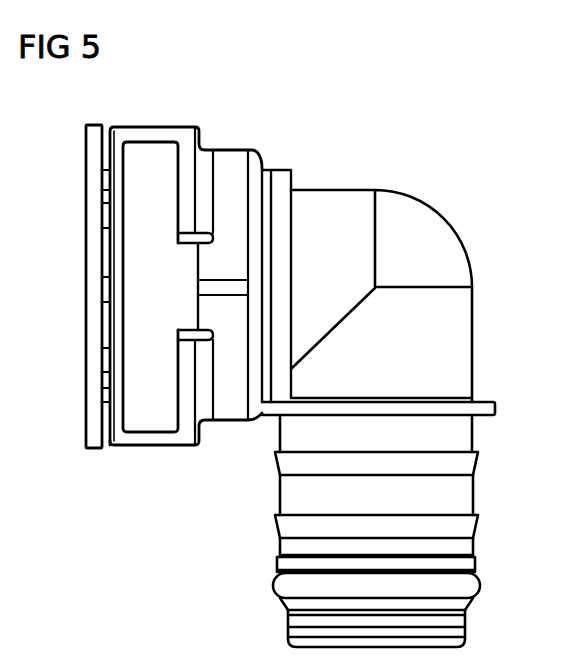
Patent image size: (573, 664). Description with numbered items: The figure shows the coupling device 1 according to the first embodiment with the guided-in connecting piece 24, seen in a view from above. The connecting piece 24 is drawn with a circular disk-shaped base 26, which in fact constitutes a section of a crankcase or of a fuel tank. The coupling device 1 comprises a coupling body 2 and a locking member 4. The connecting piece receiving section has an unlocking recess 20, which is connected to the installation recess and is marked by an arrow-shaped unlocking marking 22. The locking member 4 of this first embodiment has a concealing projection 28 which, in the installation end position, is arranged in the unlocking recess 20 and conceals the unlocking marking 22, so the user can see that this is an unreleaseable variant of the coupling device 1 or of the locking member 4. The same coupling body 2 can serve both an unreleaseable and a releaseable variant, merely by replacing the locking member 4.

The coupling device 1 is at (476, 178).
The coupling body 2 is at (462, 328).
The locking member 4 is at (153, 172).
The unlocking recess 20 is at (210, 327).
The unlocking marking 22 is at (240, 288).
The connecting piece 24 is at (85, 263).
The base 26 is at (93, 423).
The concealing projection 28 is at (193, 263).